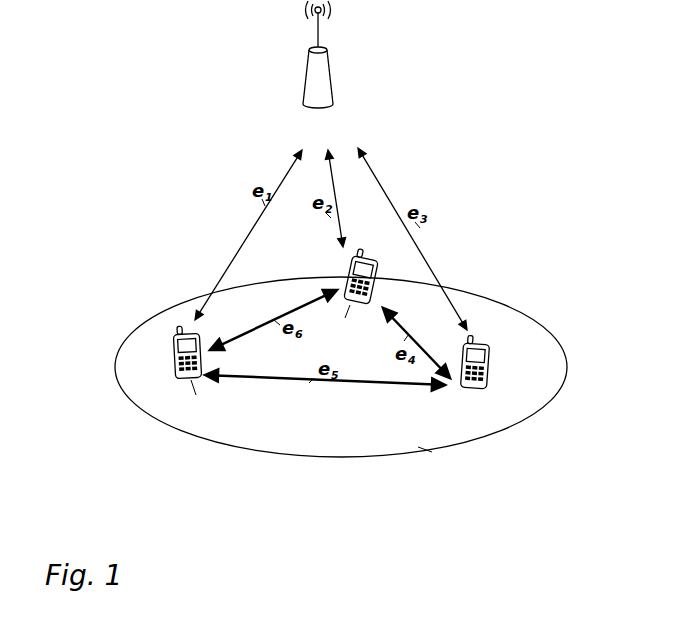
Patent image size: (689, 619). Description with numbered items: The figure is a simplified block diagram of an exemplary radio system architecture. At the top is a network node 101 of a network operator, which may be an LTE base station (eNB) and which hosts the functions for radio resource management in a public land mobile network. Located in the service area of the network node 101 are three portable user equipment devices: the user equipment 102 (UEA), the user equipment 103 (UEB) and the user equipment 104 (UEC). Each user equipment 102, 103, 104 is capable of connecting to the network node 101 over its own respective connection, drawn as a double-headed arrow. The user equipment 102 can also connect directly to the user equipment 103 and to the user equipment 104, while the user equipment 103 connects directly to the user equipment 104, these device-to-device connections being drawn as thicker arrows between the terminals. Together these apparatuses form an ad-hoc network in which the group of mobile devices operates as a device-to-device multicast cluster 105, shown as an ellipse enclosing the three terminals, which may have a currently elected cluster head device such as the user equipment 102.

The network node 101 is at (329, 67).
The user equipment 102 is at (362, 257).
The user equipment 103 is at (173, 358).
The user equipment 104 is at (490, 366).
The multicast cluster 105 is at (518, 308).